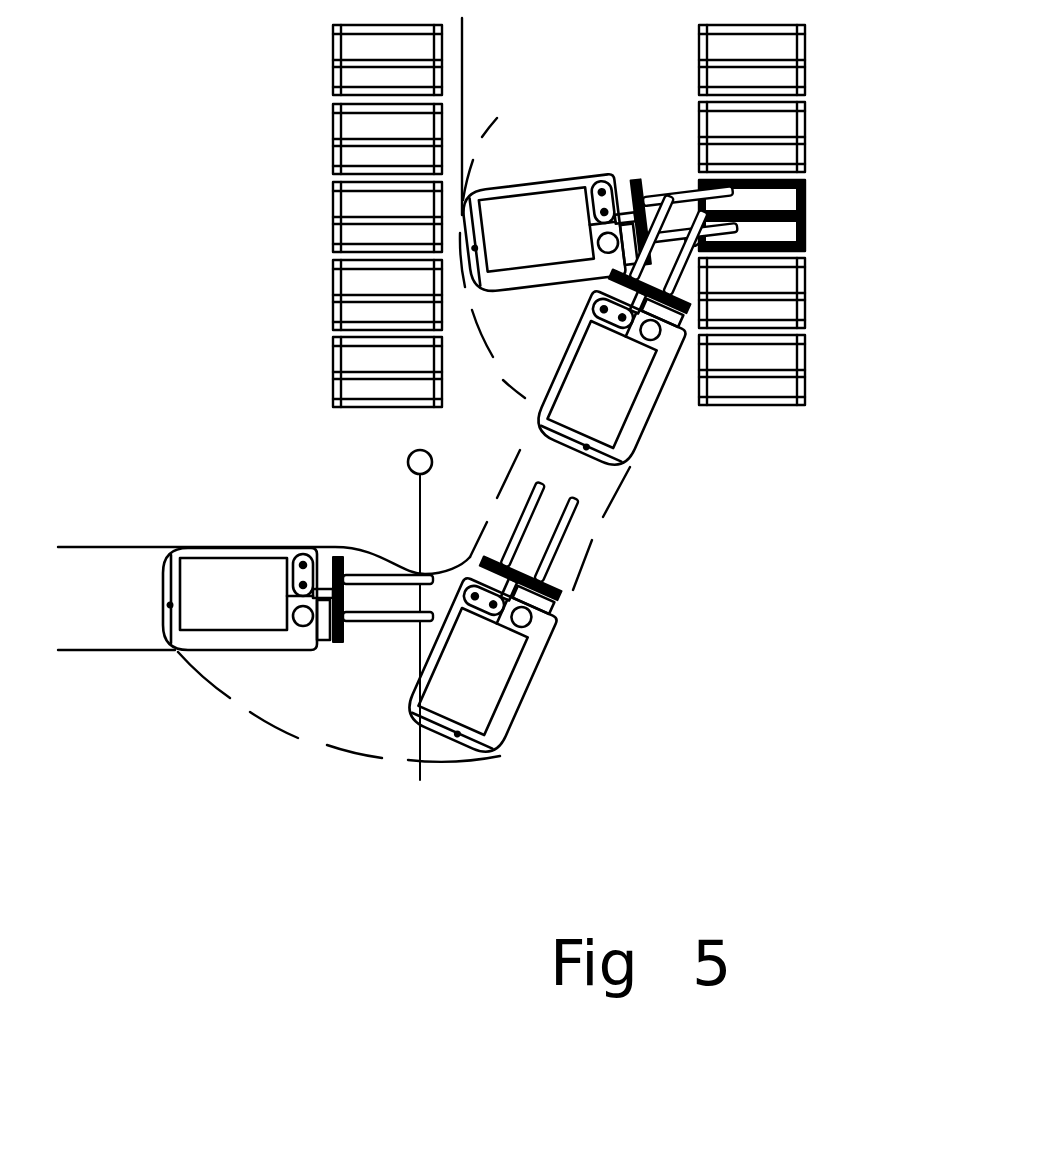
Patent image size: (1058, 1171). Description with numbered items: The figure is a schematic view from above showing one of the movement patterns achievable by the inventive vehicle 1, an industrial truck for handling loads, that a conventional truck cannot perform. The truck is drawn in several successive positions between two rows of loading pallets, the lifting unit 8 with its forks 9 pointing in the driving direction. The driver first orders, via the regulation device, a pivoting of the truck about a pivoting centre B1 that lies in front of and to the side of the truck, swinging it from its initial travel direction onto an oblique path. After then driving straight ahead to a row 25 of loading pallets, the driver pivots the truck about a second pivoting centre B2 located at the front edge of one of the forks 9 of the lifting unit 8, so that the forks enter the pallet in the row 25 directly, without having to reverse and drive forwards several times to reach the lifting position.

The vehicle 1 is at (548, 678).
The lifting unit 8 is at (637, 187).
The forks 9 is at (682, 188).
The row of loading pallets 25 is at (818, 118).
The pivoting centre B1 is at (408, 455).
The pivoting centre B2 is at (834, 432).